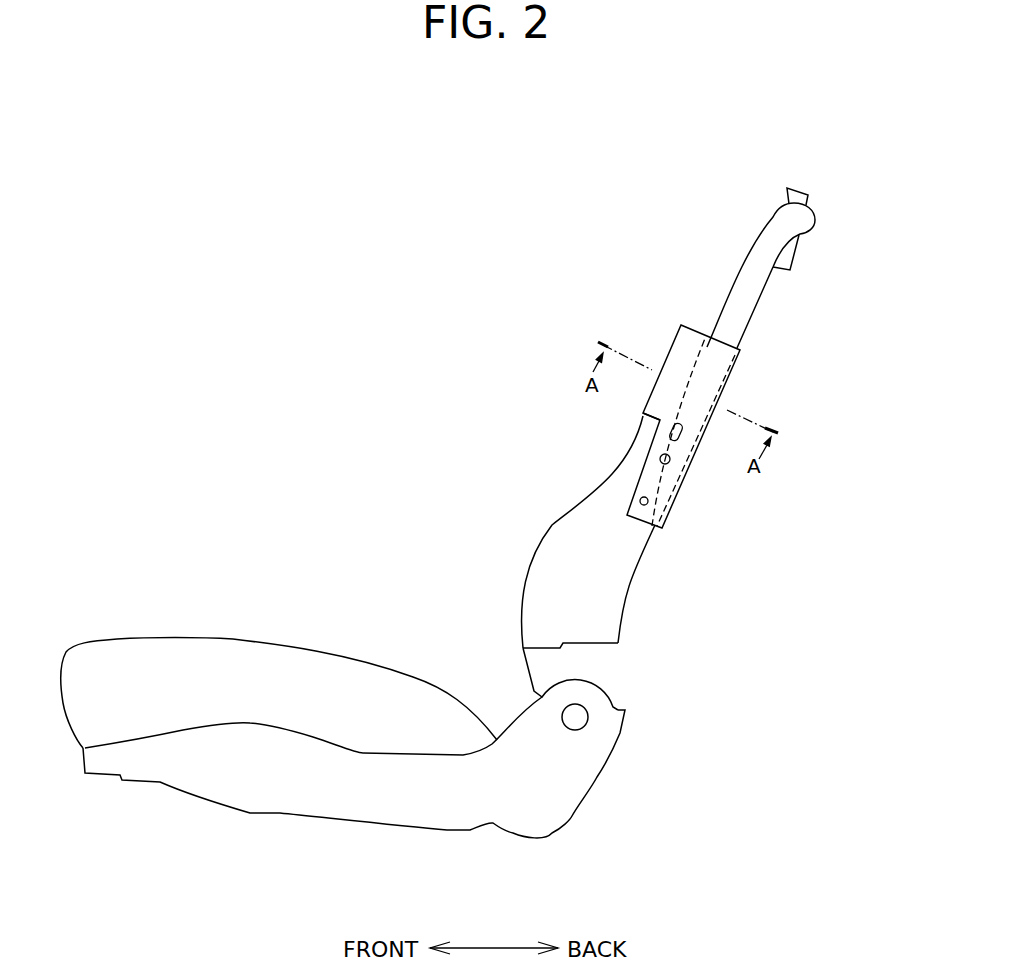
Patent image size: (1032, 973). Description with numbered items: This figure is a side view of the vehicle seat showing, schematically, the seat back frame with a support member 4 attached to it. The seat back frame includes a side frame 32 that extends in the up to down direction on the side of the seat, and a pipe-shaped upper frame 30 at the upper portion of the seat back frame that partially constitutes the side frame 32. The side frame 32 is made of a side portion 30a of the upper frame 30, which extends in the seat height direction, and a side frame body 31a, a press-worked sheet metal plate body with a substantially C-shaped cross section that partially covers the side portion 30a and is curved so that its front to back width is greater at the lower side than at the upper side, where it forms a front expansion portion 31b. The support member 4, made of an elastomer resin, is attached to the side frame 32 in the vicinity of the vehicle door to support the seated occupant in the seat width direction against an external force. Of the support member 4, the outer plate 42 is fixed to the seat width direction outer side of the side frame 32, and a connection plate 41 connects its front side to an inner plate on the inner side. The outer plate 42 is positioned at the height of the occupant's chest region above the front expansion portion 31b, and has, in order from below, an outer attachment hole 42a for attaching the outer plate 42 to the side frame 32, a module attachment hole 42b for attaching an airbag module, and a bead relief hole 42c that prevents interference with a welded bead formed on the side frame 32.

The support member 4 is at (673, 420).
The upper frame 30 is at (776, 243).
The side portion 30a is at (738, 298).
The side frame body 31a is at (712, 375).
The front expansion portion 31b is at (552, 527).
The side frame 32 is at (782, 332).
The connection plate 41 is at (651, 387).
The outer plate 42 is at (697, 420).
The outer attachment hole 42a is at (642, 505).
The module attachment hole 42b is at (669, 463).
The bead relief hole 42c is at (681, 433).